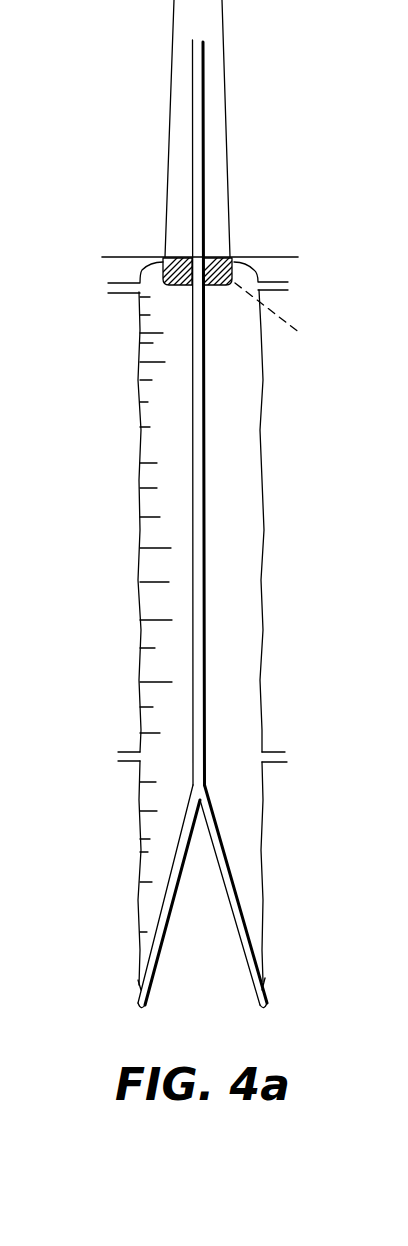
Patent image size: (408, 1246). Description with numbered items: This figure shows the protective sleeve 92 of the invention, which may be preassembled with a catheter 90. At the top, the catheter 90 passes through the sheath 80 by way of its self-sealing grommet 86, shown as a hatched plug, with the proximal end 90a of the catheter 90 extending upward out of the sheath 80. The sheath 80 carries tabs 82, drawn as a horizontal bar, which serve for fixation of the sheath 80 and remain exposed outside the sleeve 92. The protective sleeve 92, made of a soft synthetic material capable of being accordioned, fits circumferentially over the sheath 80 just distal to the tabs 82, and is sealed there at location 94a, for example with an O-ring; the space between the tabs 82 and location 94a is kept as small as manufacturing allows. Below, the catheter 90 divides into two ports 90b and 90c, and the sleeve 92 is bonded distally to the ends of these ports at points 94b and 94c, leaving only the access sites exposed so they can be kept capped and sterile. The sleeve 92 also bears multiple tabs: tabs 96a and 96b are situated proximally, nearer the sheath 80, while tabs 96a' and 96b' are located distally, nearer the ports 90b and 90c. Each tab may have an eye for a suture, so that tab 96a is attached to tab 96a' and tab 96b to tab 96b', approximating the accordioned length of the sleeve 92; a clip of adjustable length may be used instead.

The sheath 80 is at (228, 173).
The tabs 82 is at (117, 255).
The self-sealing grommet 86 is at (177, 288).
The catheter 90 is at (202, 133).
The proximal end 90a is at (202, 65).
The port 90b is at (266, 1010).
The port 90c is at (140, 1008).
The protective sleeve 92 is at (264, 492).
The location 94a is at (290, 316).
The point 94b is at (265, 985).
The point 94c is at (139, 988).
The tab 96a is at (301, 283).
The tab 96b is at (100, 277).
The tab 96a' is at (306, 740).
The tab 96b' is at (96, 739).